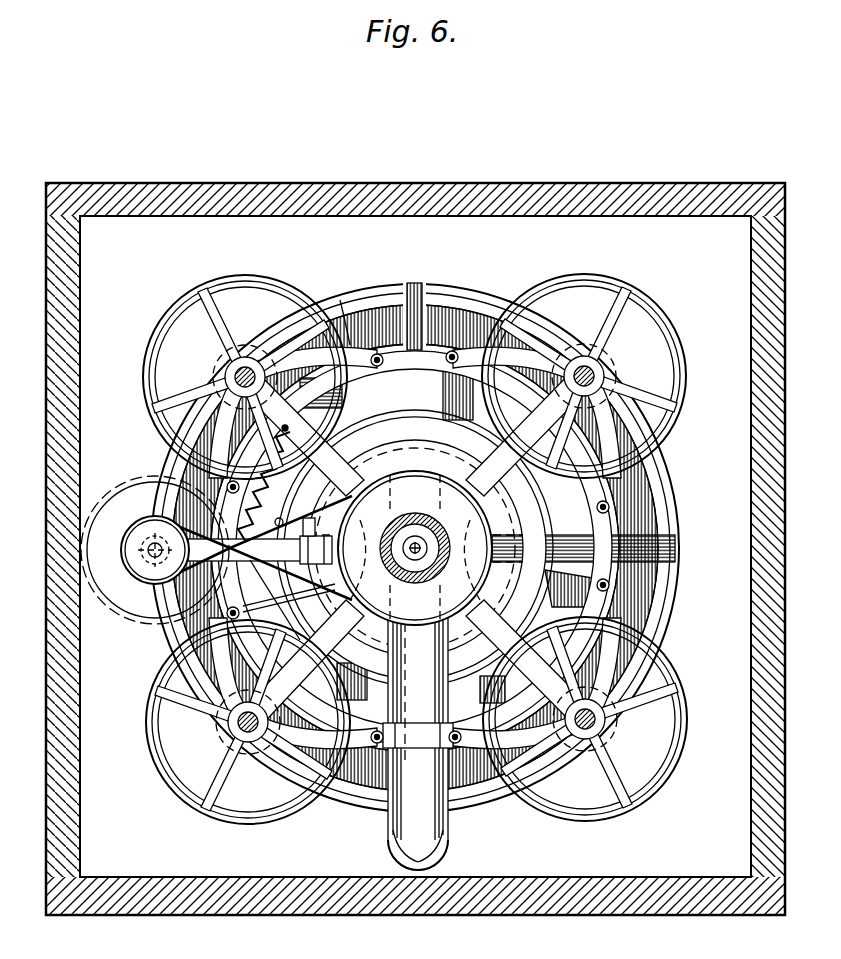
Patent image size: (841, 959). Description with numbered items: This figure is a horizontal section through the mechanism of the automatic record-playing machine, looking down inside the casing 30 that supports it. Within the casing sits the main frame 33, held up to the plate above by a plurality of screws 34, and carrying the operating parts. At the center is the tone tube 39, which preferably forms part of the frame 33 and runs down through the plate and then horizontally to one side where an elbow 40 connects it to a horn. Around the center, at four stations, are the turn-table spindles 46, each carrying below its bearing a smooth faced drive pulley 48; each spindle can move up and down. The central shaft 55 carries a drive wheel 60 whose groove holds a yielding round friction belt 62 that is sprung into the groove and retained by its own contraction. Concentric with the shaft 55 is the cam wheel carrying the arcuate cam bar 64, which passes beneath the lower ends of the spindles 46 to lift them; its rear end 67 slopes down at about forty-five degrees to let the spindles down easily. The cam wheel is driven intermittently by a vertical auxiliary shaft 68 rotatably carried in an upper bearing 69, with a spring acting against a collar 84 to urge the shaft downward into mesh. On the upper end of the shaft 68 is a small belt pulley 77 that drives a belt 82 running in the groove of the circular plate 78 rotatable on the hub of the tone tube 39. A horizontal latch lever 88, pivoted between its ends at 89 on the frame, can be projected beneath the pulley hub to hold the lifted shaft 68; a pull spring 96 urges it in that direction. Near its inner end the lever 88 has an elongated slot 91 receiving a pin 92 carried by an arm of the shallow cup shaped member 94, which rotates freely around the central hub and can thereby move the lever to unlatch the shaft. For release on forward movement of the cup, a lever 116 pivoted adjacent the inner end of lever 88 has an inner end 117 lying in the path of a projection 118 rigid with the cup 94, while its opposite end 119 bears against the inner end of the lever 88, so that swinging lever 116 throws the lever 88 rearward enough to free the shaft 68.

The casing 30 is at (605, 183).
The main frame 33 is at (660, 610).
The screws 34 is at (360, 305).
The tone tube 39 is at (416, 715).
The elbow 40 is at (388, 852).
The spindle 46 is at (247, 368).
The drive pulley 48 is at (187, 312).
The central shaft 55 is at (430, 545).
The drive wheel 60 is at (535, 532).
The friction belt 62 is at (548, 528).
The cam bar 64 is at (416, 283).
The rear end of cam bar 67 is at (340, 300).
The auxiliary shaft 68 is at (135, 540).
The upper bearing 69 is at (128, 560).
The belt pulley 77 is at (150, 575).
The circular plate 78 is at (450, 468).
The belt 82 is at (418, 468).
The collar 84 is at (399, 549).
The latch lever 88 is at (259, 573).
The pivot 89 is at (260, 548).
The slot 91 is at (289, 605).
The pin 92 is at (285, 600).
The cup shaped member 94 is at (455, 352).
The pull spring 96 is at (264, 468).
The lever 116 is at (317, 504).
The inner end of lever 117 is at (415, 538).
The projection 118 is at (337, 547).
The opposite end of lever 119 is at (275, 507).